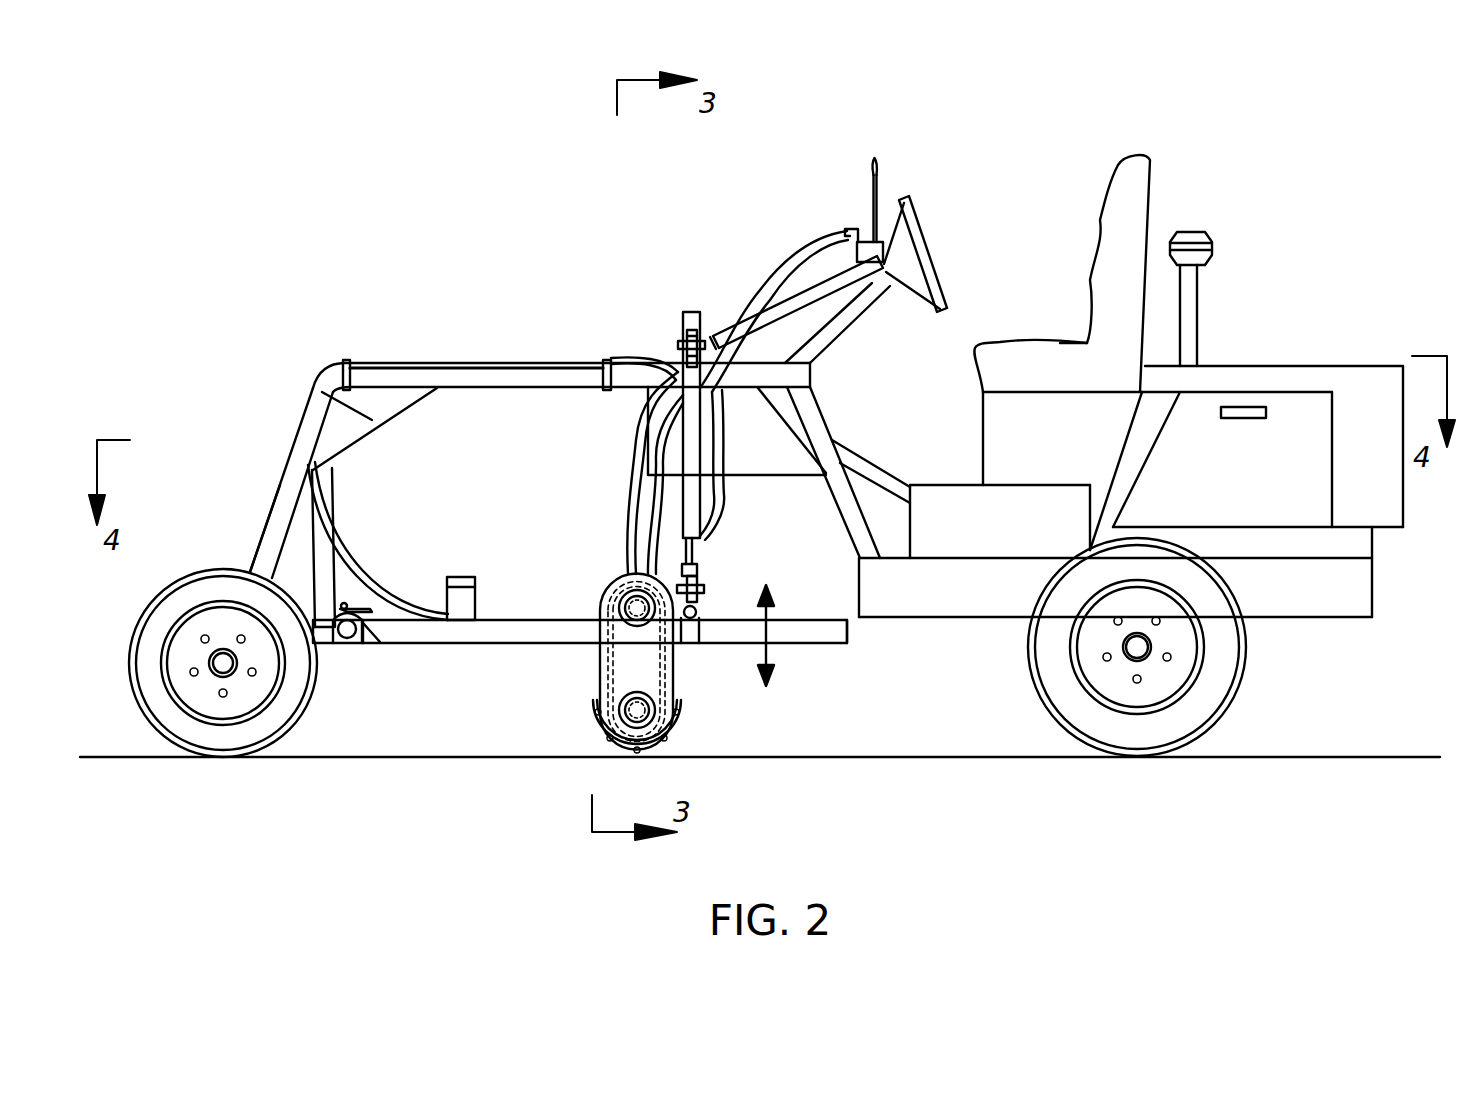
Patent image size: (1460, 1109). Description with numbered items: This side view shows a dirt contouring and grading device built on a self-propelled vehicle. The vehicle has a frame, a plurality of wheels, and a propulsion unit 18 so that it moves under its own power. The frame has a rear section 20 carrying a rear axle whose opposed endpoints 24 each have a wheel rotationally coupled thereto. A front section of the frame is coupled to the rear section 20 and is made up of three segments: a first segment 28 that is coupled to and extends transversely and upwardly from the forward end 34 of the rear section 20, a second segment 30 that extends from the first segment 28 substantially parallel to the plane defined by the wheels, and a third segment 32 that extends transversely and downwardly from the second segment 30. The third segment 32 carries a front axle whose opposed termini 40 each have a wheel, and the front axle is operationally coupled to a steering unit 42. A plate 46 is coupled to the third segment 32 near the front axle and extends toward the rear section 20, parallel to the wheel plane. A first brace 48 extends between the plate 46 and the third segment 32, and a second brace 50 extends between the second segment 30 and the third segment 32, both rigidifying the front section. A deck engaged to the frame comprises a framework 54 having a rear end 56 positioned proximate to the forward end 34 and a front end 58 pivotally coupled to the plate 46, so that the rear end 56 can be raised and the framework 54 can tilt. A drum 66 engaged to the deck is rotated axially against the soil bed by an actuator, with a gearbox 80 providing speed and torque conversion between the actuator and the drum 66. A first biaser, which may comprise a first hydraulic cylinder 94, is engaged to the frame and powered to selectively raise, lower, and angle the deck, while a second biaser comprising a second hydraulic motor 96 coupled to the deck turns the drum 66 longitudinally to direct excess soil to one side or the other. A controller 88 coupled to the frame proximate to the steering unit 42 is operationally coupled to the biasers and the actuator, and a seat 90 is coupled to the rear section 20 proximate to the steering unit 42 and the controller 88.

The propulsion unit 18 is at (1283, 450).
The rear section 20 is at (970, 602).
The opposed endpoints 24 is at (1140, 650).
The first segment 28 is at (823, 410).
The second segment 30 is at (500, 372).
The third segment 32 is at (312, 440).
The forward end 34 is at (860, 587).
The opposed termini 40 is at (220, 668).
The steering unit 42 is at (922, 248).
The plate 46 is at (322, 640).
The first brace 48 is at (298, 538).
The second brace 50 is at (320, 392).
The framework 54 is at (503, 628).
The rear end 56 is at (848, 633).
The front end 58 is at (364, 622).
The drum 66 is at (670, 702).
The gearbox 80 is at (627, 662).
The controller 88 is at (878, 160).
The seat 90 is at (1120, 220).
The first hydraulic cylinder 94 is at (693, 418).
The second hydraulic motor 96 is at (462, 600).